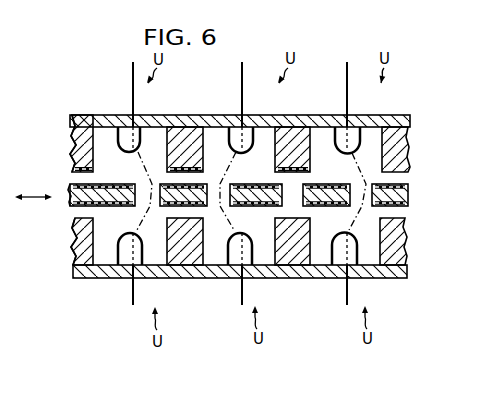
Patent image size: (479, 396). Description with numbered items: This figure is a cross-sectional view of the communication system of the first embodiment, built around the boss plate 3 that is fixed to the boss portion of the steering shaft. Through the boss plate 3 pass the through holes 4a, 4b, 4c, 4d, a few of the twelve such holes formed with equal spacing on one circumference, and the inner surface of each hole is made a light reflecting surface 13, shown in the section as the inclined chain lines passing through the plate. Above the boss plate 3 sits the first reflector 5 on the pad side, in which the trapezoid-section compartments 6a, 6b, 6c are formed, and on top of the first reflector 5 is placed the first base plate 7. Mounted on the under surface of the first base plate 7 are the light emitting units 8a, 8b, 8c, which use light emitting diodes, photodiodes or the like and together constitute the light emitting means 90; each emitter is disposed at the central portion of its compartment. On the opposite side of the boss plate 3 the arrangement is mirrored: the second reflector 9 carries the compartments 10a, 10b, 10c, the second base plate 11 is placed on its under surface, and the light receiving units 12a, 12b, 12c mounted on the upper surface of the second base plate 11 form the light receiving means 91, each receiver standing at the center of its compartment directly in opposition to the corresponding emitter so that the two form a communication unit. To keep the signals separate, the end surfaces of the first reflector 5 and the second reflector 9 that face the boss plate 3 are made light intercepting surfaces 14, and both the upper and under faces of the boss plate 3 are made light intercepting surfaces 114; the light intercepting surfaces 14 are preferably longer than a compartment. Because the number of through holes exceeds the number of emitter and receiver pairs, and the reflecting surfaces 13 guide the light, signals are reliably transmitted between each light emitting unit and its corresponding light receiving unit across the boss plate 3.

The boss plate 3 is at (409, 193).
The through hole 4a is at (140, 184).
The through hole 4b is at (224, 186).
The through hole 4c is at (294, 186).
The through hole 4d is at (349, 211).
The first reflector 5 is at (411, 146).
The compartment 6a is at (118, 123).
The compartment 6b is at (217, 124).
The compartment 6c is at (322, 124).
The first base plate 7 is at (401, 114).
The light emitting unit 8a is at (142, 121).
The light emitting unit 8b is at (248, 121).
The light emitting unit 8c is at (354, 121).
The second reflector 9 is at (405, 233).
The compartment 10a is at (98, 277).
The compartment 10b is at (203, 277).
The compartment 10c is at (310, 277).
The second base plate 11 is at (397, 277).
The light receiving unit 12a is at (139, 269).
The light receiving unit 12b is at (250, 269).
The light receiving unit 12c is at (353, 269).
The light reflecting surface 13 is at (139, 212).
The light intercepting surface 14 is at (76, 165).
The light intercepting surface 114 is at (72, 185).
The light emitting means 90 is at (130, 64).
The light receiving means 91 is at (132, 326).